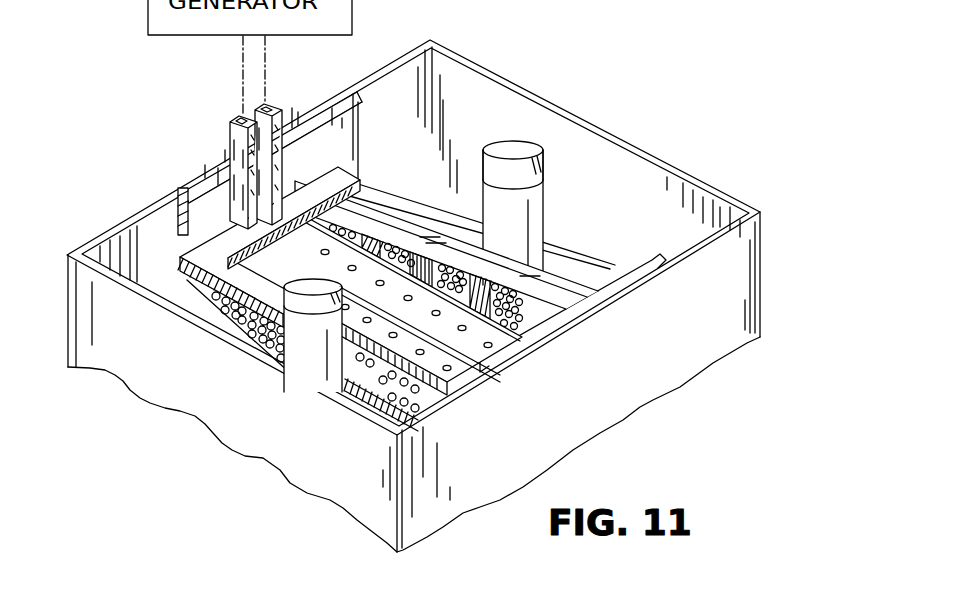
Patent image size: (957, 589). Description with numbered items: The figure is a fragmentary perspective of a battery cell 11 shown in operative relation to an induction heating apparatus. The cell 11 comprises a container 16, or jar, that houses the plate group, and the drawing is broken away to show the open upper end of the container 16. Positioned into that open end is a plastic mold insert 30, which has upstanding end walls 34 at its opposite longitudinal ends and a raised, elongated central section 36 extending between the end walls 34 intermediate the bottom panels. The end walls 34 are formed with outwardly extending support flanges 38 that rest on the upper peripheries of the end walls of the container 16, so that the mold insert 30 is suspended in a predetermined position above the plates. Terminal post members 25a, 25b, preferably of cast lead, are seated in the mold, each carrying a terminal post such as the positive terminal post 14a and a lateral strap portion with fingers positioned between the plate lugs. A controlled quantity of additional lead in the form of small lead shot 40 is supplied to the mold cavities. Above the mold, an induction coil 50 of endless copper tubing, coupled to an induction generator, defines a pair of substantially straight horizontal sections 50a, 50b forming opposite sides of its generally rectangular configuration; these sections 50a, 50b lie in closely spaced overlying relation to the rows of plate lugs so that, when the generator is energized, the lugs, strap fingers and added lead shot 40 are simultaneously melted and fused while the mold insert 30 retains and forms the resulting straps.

The cell 11 is at (675, 230).
The positive terminal post 14a is at (540, 158).
The container 16 is at (728, 318).
The terminal post member 25a is at (553, 183).
The terminal post member 25b is at (312, 357).
The mold insert 30 is at (453, 198).
The end wall 34 is at (358, 118).
The raised central section 36 is at (316, 240).
The support flange 38 is at (318, 112).
The lead shot 40 is at (430, 272).
The induction coil 50 is at (226, 141).
The horizontal section 50a is at (490, 276).
The horizontal section 50b is at (183, 268).